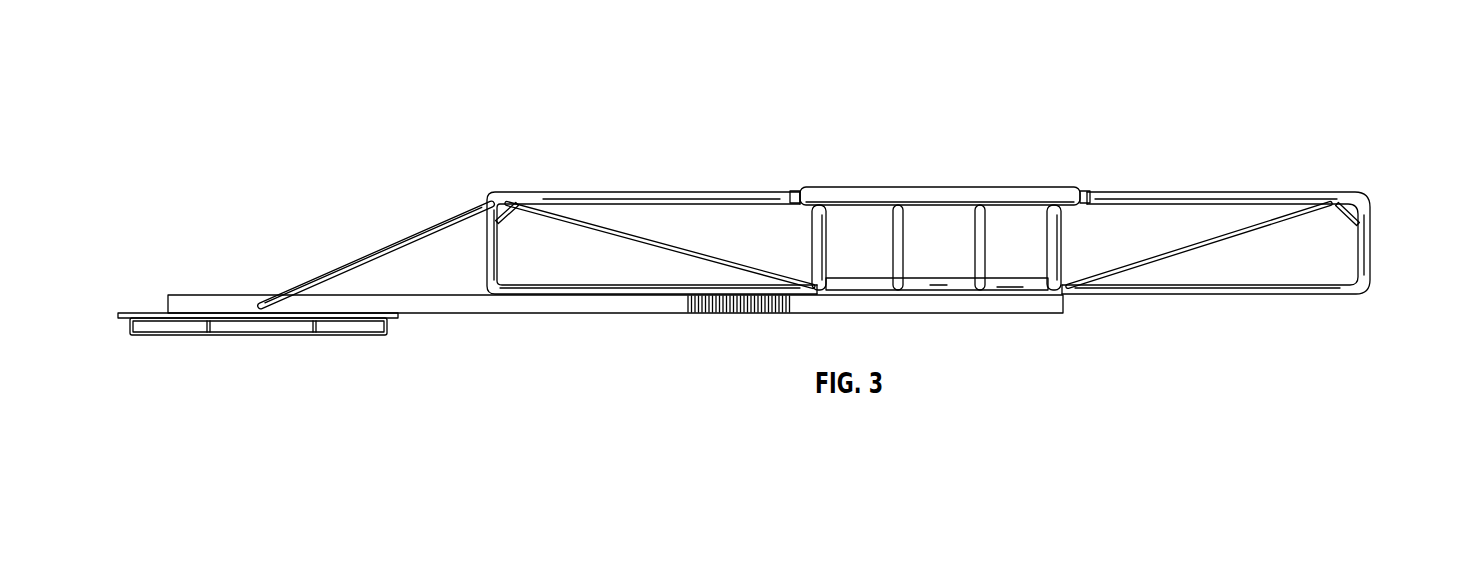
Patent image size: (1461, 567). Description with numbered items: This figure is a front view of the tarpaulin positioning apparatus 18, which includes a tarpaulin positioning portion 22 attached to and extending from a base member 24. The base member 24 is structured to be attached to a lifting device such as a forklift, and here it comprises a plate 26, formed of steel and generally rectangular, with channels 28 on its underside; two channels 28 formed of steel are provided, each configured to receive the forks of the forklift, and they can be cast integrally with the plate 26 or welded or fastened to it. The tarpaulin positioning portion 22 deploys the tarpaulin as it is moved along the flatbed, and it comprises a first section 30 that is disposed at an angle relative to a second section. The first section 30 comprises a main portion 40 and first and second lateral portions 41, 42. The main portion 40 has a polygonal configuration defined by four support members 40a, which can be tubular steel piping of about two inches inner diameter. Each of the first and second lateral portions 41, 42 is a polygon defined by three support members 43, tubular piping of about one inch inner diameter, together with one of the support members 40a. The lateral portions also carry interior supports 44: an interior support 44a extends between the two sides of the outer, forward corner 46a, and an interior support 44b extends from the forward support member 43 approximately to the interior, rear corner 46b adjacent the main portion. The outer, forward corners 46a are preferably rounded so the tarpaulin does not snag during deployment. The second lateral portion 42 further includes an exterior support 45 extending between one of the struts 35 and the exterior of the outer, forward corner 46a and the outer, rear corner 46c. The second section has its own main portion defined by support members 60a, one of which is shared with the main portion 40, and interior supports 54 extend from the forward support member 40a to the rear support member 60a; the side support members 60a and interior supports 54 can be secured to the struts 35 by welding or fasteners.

The tarpaulin positioning apparatus 18 is at (948, 162).
The tarpaulin positioning portion 22 is at (1172, 192).
The base member 24 is at (115, 320).
The plate 26 is at (140, 312).
The channels 28 is at (352, 337).
The first section 30 is at (1002, 182).
The struts 35 is at (592, 305).
The main portion 40 is at (853, 179).
The support members 40a is at (1050, 192).
The first lateral portion 41 is at (1276, 184).
The second lateral portion 42 is at (590, 184).
The support members 43 is at (677, 190).
The interior supports 44 is at (558, 210).
The interior support 44a is at (505, 221).
The interior support 44b is at (630, 235).
The exterior supports 45 is at (368, 257).
The outer, forward corner 46a is at (498, 198).
The interior, rear corner 46b is at (813, 292).
The outer, rear corner 46c is at (498, 295).
The interior supports 54 is at (975, 252).
The support members 60a is at (863, 287).